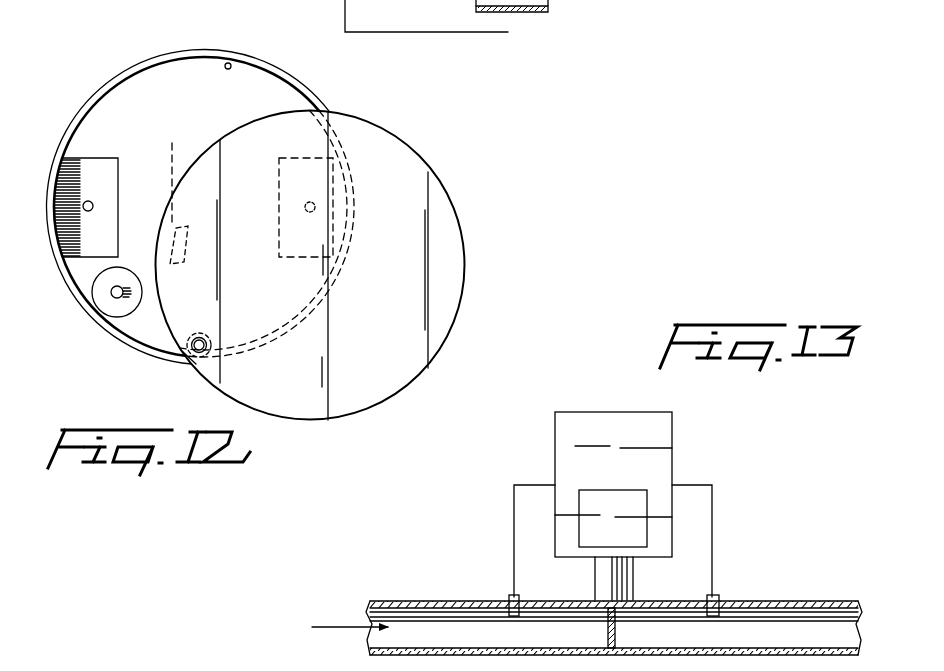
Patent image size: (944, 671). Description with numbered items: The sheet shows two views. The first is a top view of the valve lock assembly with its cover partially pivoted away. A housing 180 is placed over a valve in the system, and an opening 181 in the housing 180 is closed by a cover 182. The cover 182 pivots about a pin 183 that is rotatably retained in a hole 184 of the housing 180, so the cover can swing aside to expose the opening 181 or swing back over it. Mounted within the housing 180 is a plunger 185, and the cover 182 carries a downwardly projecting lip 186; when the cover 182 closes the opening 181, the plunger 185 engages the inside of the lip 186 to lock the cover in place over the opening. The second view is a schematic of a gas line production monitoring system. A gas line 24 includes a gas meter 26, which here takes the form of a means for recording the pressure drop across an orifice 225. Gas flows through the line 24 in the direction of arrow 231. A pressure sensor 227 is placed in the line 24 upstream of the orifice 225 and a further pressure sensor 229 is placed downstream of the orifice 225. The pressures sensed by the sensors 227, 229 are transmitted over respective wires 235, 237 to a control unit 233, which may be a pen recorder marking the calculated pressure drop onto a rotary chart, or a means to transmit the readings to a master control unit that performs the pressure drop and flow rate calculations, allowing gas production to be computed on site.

In FIG. 12, the housing 180 is at (97, 84).
In FIG. 12, the opening 181 is at (230, 63).
In FIG. 12, the cover 182 is at (427, 163).
In FIG. 12, the pin 183 is at (186, 361).
In FIG. 12, the hole 184 is at (205, 341).
In FIG. 12, the plunger 185 is at (120, 290).
In FIG. 12, the downwardly projecting lip 186 is at (171, 191).
In FIG. 13, the gas meter 26 is at (677, 428).
In FIG. 13, the control unit 233 is at (553, 432).
In FIG. 13, the wire 235 is at (514, 524).
In FIG. 13, the wire 237 is at (712, 526).
In FIG. 13, the gas line 24 is at (824, 601).
In FIG. 13, the orifice 225 is at (616, 626).
In FIG. 13, the pressure sensor 227 is at (519, 600).
In FIG. 13, the pressure sensor 229 is at (720, 598).
In FIG. 13, the arrow 231 is at (337, 625).